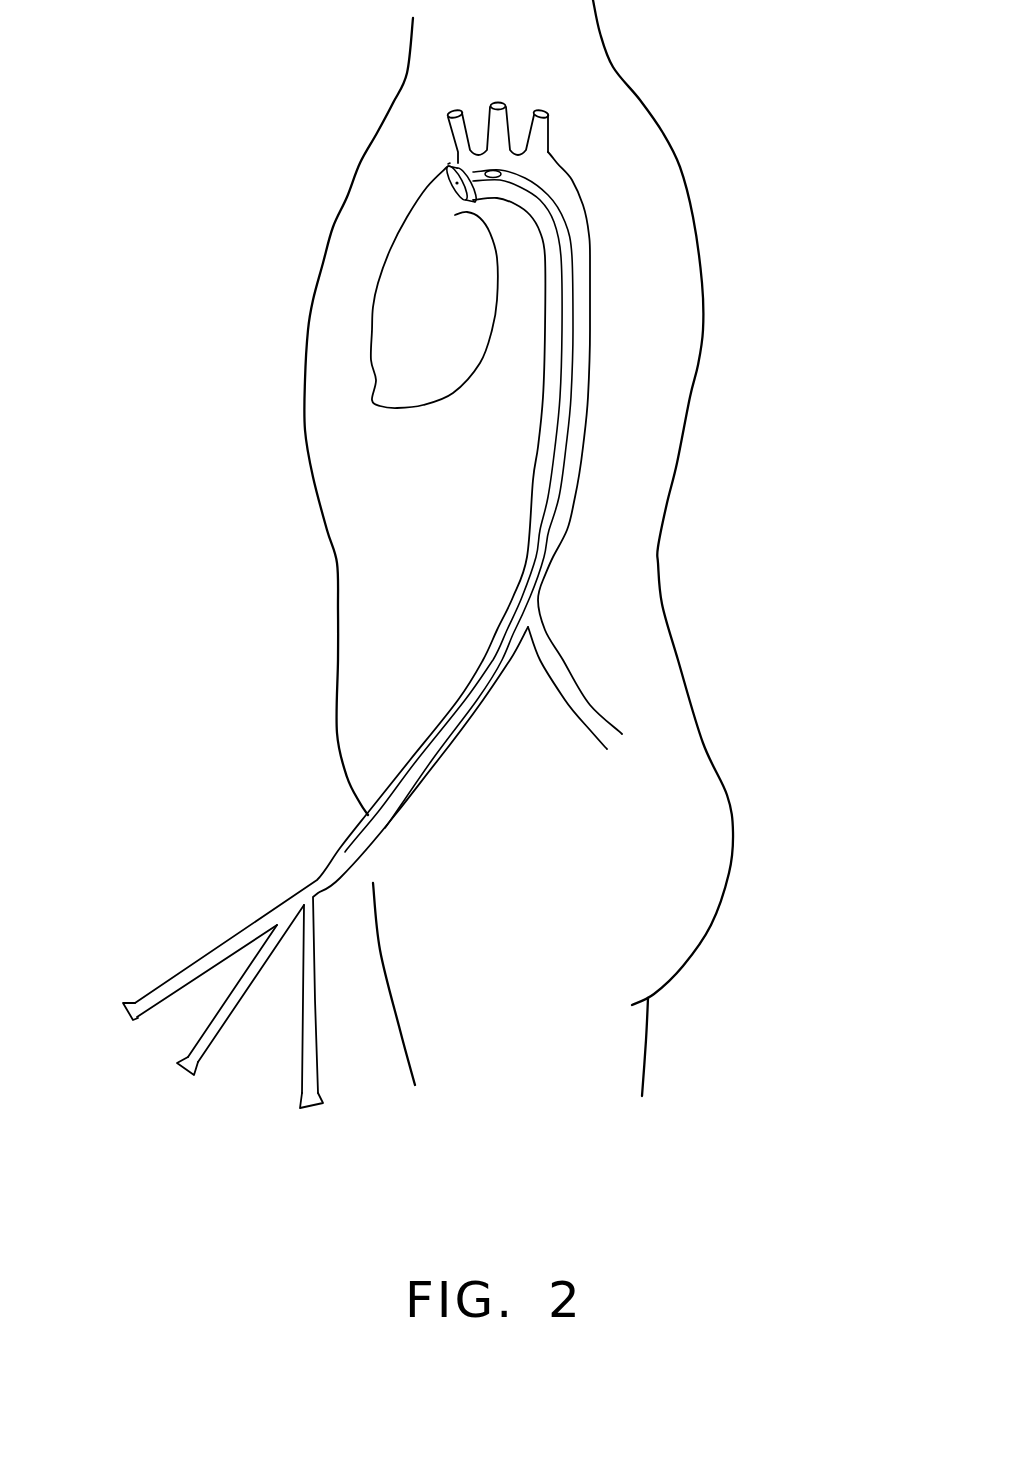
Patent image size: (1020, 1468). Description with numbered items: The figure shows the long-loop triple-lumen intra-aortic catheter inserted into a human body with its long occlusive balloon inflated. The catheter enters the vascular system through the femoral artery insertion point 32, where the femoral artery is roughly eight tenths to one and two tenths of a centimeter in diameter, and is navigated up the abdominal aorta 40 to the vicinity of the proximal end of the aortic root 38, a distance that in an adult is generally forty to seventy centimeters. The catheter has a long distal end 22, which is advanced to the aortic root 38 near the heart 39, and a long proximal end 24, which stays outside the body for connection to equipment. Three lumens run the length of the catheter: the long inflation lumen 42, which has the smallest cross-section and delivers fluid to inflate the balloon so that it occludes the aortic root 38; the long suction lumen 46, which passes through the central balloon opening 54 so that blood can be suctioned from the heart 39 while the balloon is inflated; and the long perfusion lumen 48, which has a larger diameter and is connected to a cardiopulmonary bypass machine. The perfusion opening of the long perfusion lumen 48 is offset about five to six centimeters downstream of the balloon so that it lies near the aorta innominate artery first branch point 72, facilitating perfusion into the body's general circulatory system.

The long distal end 22 is at (275, 139).
The long proximal end 24 is at (447, 172).
The femoral artery insertion point 32 is at (368, 813).
The aortic root 38 is at (524, 84).
The heart 39 is at (373, 305).
The abdominal aorta 40 is at (450, 187).
The long inflation lumen 42 is at (152, 988).
The long suction lumen 46 is at (195, 1043).
The long perfusion lumen 48 is at (303, 1085).
The central balloon opening 54 is at (500, 172).
The aorta innominate artery first branch point 72 is at (480, 158).